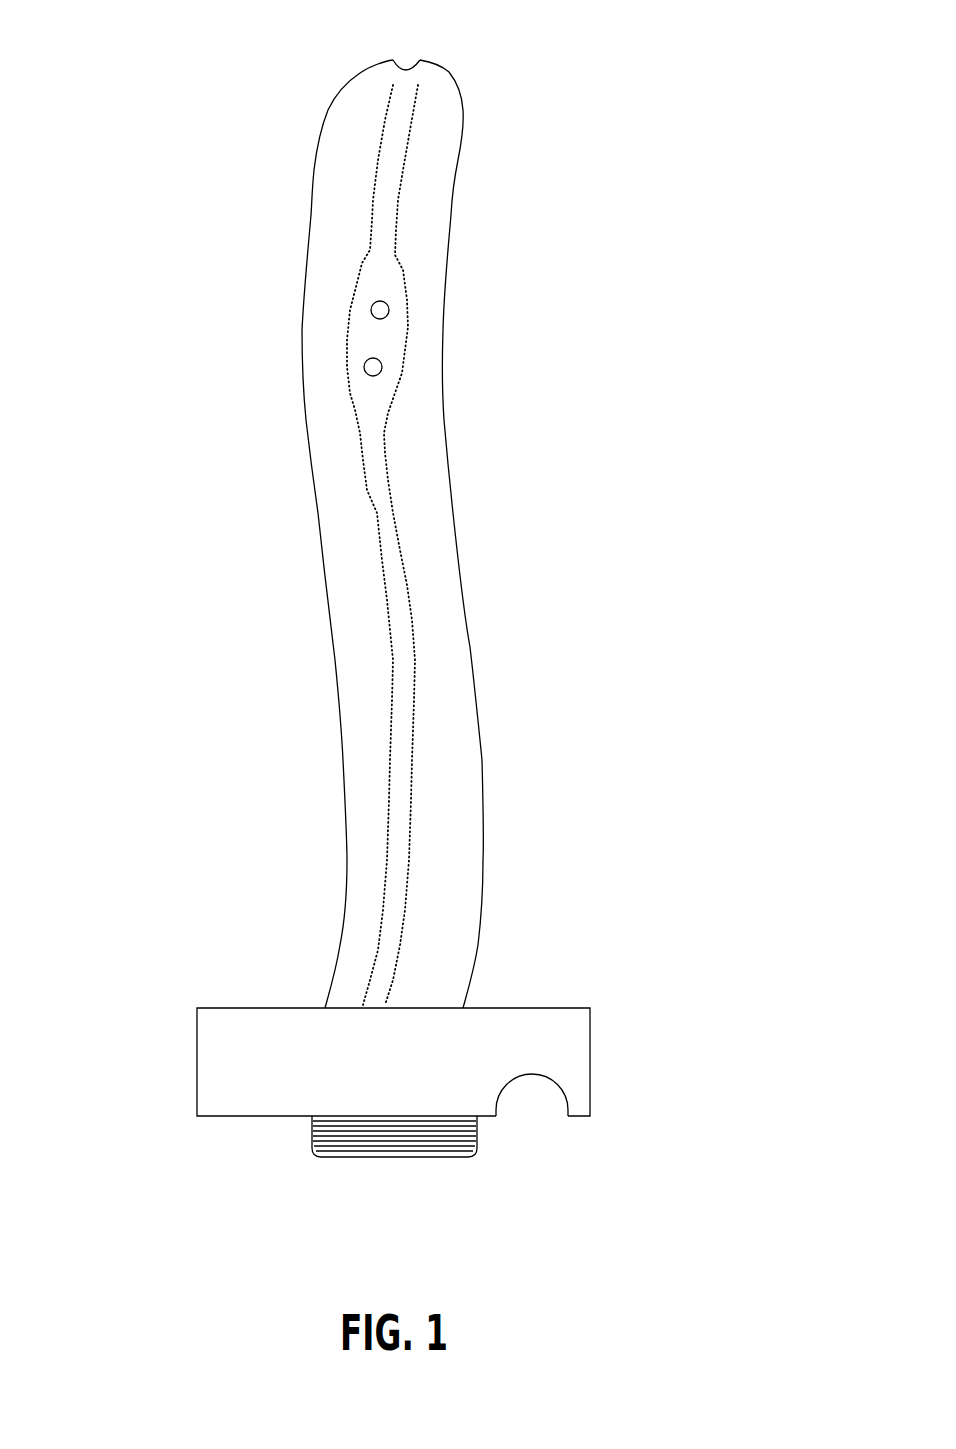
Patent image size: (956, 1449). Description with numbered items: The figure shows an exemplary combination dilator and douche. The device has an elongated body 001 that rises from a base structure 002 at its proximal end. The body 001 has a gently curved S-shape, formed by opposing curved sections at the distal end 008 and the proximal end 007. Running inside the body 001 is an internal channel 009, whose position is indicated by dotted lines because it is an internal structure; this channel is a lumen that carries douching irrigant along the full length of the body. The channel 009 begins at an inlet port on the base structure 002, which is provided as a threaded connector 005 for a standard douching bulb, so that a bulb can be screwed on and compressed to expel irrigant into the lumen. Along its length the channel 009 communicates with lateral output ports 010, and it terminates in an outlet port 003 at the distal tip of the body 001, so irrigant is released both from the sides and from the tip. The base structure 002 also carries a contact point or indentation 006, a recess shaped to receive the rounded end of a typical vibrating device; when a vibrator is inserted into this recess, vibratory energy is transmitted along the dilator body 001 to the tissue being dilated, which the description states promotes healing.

The handle body 001 is at (396, 509).
The base structure 002 is at (370, 1067).
The outlet port at the distal tip of the body 003 is at (420, 60).
The threaded connector for a standard douching bulb 005 is at (350, 1160).
The contact point or indentation for receiving a vibrating device 006 is at (517, 1083).
The curved section at the proximal end 007 is at (480, 722).
The curved section at the distal end 008 is at (303, 330).
The internal channel 009 is at (397, 397).
The lateral output ports 010 is at (381, 359).